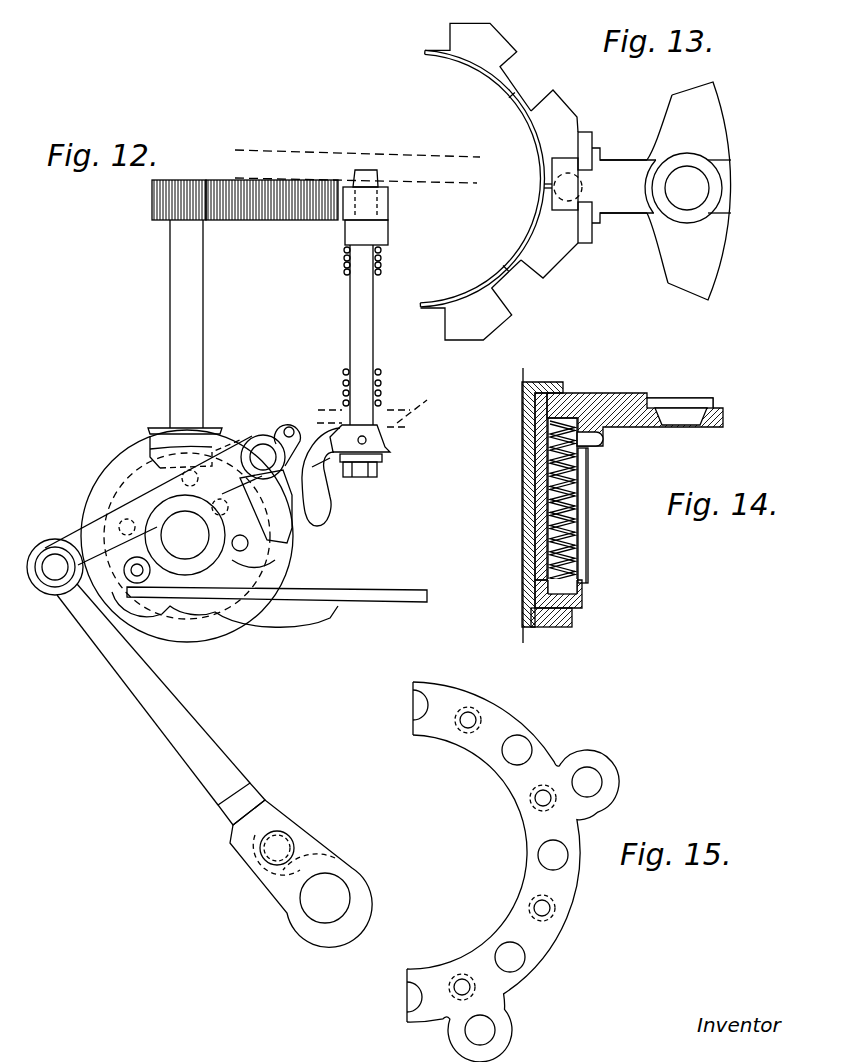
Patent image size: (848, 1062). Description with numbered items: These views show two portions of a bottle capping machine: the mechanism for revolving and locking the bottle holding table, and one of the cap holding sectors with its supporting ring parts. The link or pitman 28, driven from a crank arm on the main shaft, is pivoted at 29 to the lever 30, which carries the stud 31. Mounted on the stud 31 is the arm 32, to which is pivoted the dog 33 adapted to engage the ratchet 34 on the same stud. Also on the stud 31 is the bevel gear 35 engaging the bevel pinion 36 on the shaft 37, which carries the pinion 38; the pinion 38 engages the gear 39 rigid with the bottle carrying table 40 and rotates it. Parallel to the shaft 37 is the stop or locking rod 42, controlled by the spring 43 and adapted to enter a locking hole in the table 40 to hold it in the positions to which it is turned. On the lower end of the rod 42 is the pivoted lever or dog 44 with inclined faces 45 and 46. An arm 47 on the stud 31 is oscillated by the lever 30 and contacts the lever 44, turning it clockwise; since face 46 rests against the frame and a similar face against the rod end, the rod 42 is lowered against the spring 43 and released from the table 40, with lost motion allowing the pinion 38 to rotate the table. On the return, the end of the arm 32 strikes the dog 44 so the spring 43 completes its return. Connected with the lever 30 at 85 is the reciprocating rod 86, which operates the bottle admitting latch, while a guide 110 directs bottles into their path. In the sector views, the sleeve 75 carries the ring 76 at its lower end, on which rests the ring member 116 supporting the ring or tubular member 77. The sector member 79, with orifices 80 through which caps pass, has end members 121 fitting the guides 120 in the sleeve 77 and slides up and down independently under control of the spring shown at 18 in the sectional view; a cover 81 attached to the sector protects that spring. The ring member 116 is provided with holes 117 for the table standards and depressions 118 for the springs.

In FIG. 12, the link or pitman 28 is at (188, 740).
In FIG. 12, the pivot 29 is at (53, 560).
In FIG. 12, the lever 30 is at (98, 537).
In FIG. 12, the stud 31 is at (173, 520).
In FIG. 12, the arm 32 is at (220, 480).
In FIG. 12, the dog 33 is at (288, 525).
In FIG. 12, the ratchet 34 is at (250, 560).
In FIG. 12, the bevel gear 35 is at (130, 448).
In FIG. 12, the bevel pinion 36 is at (222, 420).
In FIG. 12, the shaft 37 is at (190, 347).
In FIG. 12, the pinion 38 is at (157, 222).
In FIG. 12, the gear 39 is at (285, 214).
In FIG. 12, the bottle carrying table 40 is at (437, 172).
In FIG. 12, the stop or locking rod 42 is at (358, 318).
In FIG. 12, the spring 43 is at (384, 268).
In FIG. 12, the pivoted lever or dog 44 is at (320, 500).
In FIG. 12, the inclined face 45 is at (386, 452).
In FIG. 12, the inclined face 46 is at (359, 425).
In FIG. 12, the arm 47 is at (300, 617).
In FIG. 12, the connection 85 is at (137, 563).
In FIG. 12, the reciprocating rod 86 is at (403, 581).
In FIG. 13, the ring or tubular member 77 is at (519, 262).
In FIG. 14, the ring or tubular member 77 is at (542, 477).
In FIG. 13, the sector member 79 is at (627, 206).
In FIG. 14, the sector member 79 is at (623, 393).
In FIG. 13, the orifice 80 is at (685, 177).
In FIG. 14, the orifice 80 is at (685, 417).
In FIG. 13, the guide 110 is at (505, 58).
In FIG. 13, the guide 120 is at (522, 283).
In FIG. 13, the end member 121 is at (565, 165).
In FIG. 14, the sleeve 75 is at (523, 528).
In FIG. 14, the spring 18 is at (578, 498).
In FIG. 14, the cover 81 is at (588, 533).
In FIG. 14, the ring member 116 is at (583, 600).
In FIG. 15, the ring member 116 is at (503, 710).
In FIG. 14, the ring 76 is at (575, 618).
In FIG. 15, the hole 117 is at (587, 782).
In FIG. 15, the depression 118 is at (518, 750).